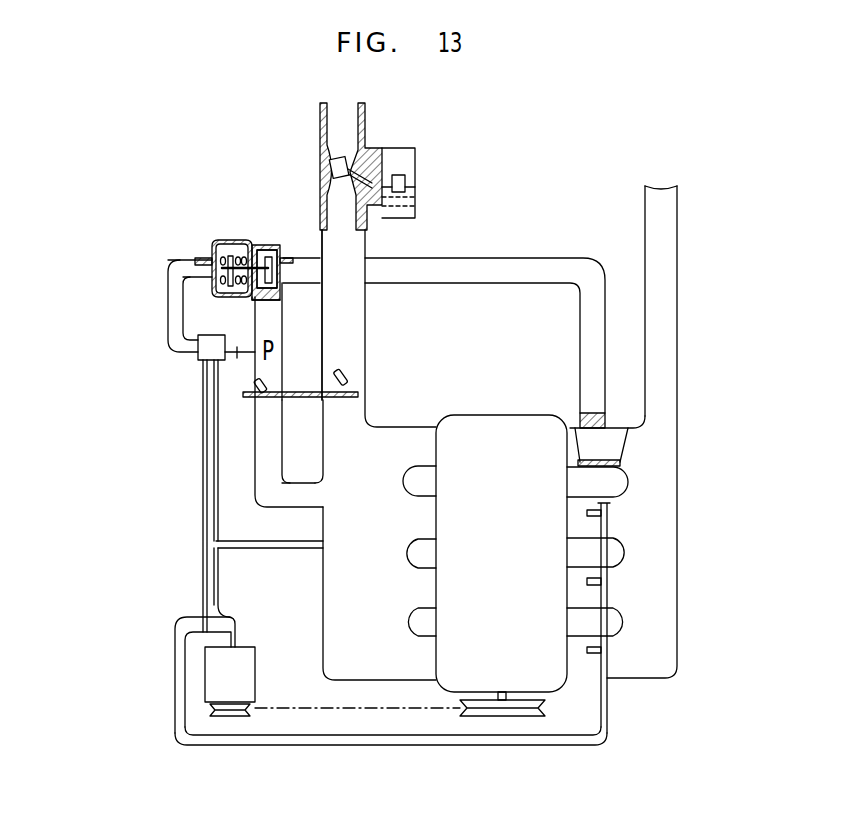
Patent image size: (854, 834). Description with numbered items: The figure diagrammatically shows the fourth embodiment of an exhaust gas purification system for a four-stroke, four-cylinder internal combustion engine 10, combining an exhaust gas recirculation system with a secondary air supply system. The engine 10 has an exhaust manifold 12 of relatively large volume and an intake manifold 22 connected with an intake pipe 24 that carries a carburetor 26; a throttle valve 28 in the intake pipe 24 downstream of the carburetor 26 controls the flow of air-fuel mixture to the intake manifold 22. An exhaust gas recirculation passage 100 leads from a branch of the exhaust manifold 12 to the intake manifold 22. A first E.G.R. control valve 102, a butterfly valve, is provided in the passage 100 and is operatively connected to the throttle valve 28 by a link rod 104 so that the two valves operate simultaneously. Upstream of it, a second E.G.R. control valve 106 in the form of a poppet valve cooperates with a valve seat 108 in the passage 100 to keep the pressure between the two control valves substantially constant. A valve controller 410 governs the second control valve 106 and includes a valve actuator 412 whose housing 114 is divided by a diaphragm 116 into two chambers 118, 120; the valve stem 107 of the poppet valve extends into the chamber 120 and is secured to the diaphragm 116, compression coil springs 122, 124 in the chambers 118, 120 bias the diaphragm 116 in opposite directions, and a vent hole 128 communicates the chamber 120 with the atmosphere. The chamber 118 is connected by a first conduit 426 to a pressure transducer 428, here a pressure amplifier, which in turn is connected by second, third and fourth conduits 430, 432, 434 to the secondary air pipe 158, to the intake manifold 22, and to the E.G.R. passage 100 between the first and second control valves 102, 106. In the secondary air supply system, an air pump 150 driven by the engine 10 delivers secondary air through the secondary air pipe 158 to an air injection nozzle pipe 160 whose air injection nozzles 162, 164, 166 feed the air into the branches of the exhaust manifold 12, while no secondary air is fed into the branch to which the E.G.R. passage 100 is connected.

The internal combustion engine 10 is at (503, 388).
The exhaust manifold 12 is at (673, 486).
The intake manifold 22 is at (305, 605).
The intake pipe 24 is at (367, 251).
The carburetor 26 is at (372, 152).
The throttle valve 28 is at (348, 383).
The exhaust gas recirculation passage 100 is at (258, 448).
The first E.G.R. control valve 102 is at (281, 385).
The link rod 104 is at (298, 398).
The second E.G.R. control valve 106 is at (278, 263).
The valve stem 107 is at (272, 252).
The valve seat 108 is at (284, 268).
The housing 114 is at (200, 205).
The diaphragm 116 is at (212, 318).
The chamber 118 is at (190, 244).
The chamber 120 is at (250, 250).
The compression coil spring 122 is at (162, 276).
The compression coil spring 124 is at (258, 300).
The vent hole 128 is at (262, 248).
The air pump 150 is at (255, 672).
The secondary air pipe 158 is at (175, 673).
The air injection nozzle pipe 160 is at (607, 588).
The air injection nozzle 162 is at (553, 648).
The air injection nozzle 164 is at (553, 572).
The air injection nozzle 166 is at (550, 505).
The valve controller 410 is at (45, 447).
The valve actuator 412 is at (207, 240).
The first conduit 426 is at (145, 300).
The pressure transducer 428 is at (165, 368).
The second conduit 430 is at (165, 511).
The third conduit 432 is at (262, 545).
The fourth conduit 434 is at (237, 357).